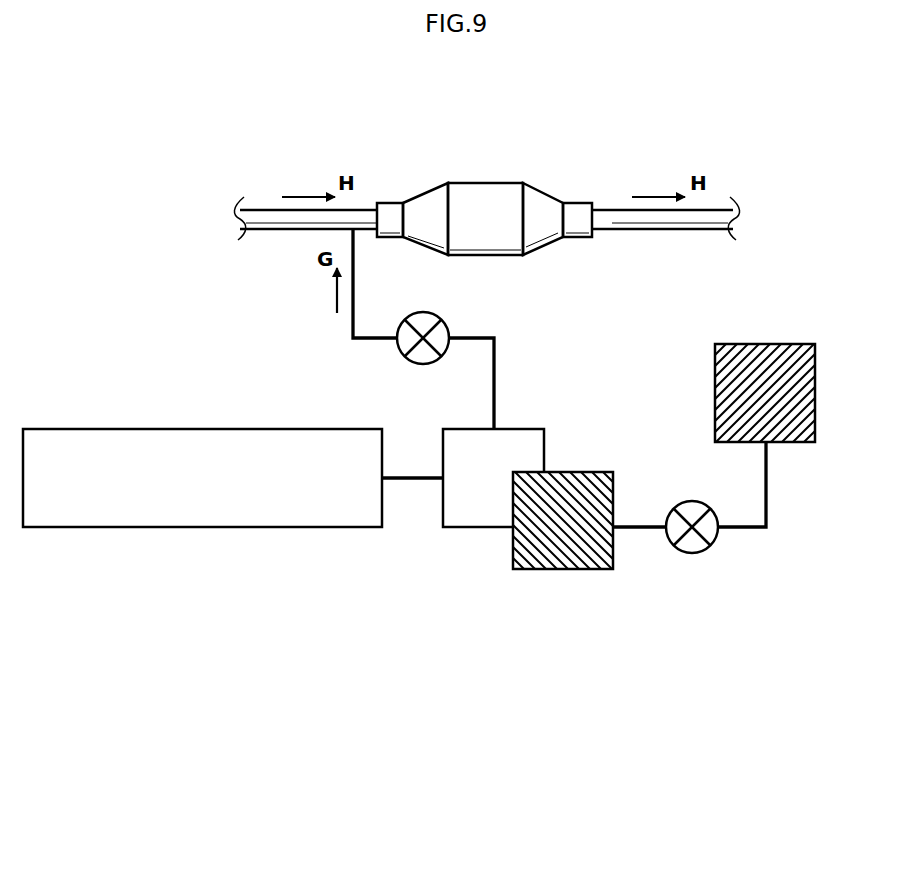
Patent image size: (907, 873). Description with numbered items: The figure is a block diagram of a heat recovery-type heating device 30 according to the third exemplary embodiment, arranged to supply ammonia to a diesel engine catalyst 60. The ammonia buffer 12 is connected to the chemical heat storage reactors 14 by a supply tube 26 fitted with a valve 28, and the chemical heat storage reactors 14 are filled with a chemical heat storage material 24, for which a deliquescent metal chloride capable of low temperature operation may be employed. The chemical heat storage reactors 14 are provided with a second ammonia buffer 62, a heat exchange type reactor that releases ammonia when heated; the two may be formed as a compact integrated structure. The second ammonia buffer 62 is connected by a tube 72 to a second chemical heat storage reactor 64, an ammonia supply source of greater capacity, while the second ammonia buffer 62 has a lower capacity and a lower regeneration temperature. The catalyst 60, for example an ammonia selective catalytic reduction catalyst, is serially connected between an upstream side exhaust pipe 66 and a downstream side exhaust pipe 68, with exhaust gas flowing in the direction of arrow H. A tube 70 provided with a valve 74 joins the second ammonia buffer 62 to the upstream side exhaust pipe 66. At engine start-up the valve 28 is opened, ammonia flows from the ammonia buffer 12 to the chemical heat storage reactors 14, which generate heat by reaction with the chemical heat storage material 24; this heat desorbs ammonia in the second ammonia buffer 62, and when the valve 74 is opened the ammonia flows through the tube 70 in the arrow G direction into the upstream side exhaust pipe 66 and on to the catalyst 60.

The ammonia buffer 12 is at (758, 344).
The chemical heat storage reactors 14 is at (563, 520).
The chemical heat storage material 24 is at (578, 569).
The supply tube 26 is at (768, 495).
The valve 28 is at (701, 500).
The heat recovery-type heating device 30 is at (836, 273).
The catalyst 60 is at (503, 183).
The second ammonia buffer 62 is at (520, 428).
The second chemical heat storage reactor 64 is at (220, 429).
The upstream side exhaust pipe 66 is at (257, 210).
The downstream side exhaust pipe 68 is at (608, 210).
The tube 70 is at (473, 337).
The tube 72 is at (403, 476).
The valve 74 is at (440, 319).